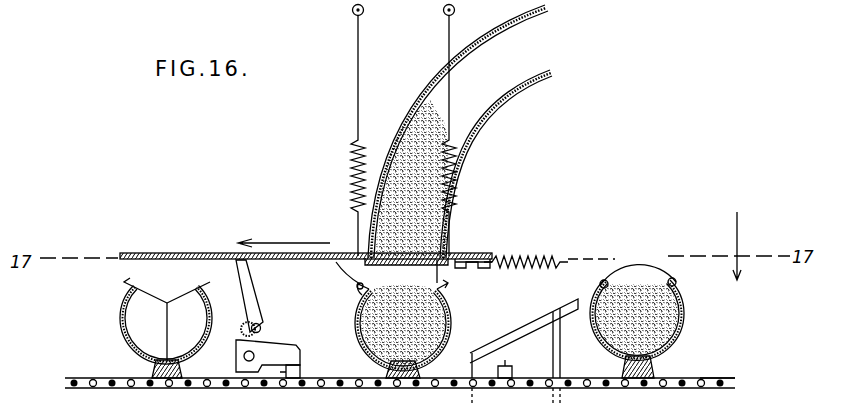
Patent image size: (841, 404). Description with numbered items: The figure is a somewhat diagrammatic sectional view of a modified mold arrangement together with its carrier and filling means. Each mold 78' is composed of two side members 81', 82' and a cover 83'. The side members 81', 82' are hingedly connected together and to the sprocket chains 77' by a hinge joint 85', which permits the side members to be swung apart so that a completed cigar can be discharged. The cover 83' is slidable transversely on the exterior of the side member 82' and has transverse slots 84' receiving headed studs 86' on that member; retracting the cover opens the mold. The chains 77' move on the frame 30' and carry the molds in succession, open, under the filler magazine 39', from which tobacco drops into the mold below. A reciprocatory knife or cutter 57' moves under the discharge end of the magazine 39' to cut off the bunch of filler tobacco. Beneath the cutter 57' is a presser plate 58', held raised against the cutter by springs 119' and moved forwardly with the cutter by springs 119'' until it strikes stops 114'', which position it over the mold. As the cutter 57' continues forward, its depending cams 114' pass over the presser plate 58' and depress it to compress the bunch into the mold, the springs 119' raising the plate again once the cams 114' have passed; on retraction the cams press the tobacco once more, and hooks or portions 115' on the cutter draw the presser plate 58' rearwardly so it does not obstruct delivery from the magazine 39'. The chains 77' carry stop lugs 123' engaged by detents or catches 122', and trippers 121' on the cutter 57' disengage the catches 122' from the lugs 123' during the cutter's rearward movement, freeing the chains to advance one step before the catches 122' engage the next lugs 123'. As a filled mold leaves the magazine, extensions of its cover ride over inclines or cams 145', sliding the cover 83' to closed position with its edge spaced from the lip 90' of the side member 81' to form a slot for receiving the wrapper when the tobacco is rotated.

The frame 30' is at (430, 391).
The sprocket chains 77' is at (735, 364).
The depending cams 114' is at (306, 266).
The filler magazine 39' is at (458, 135).
The springs 119' is at (336, 131).
The stops 114'' is at (463, 131).
The reciprocatory knife or cutter 57' is at (480, 239).
The springs 119'' is at (549, 245).
The hooks or portions 115' is at (481, 279).
The trippers 121' is at (265, 298).
The detents or catches 122' is at (269, 352).
The stop lugs 123' is at (412, 363).
The presser plate 58' is at (333, 286).
The transverse slots 84' is at (383, 293).
The side member 82' is at (408, 325).
The side member 81' is at (442, 312).
The cover 83' is at (388, 264).
The hinge joint 85' is at (419, 369).
The headed studs 86' is at (580, 285).
The lip 90' is at (696, 289).
The mold 78' is at (591, 297).
The inclines or cams 145' is at (524, 351).